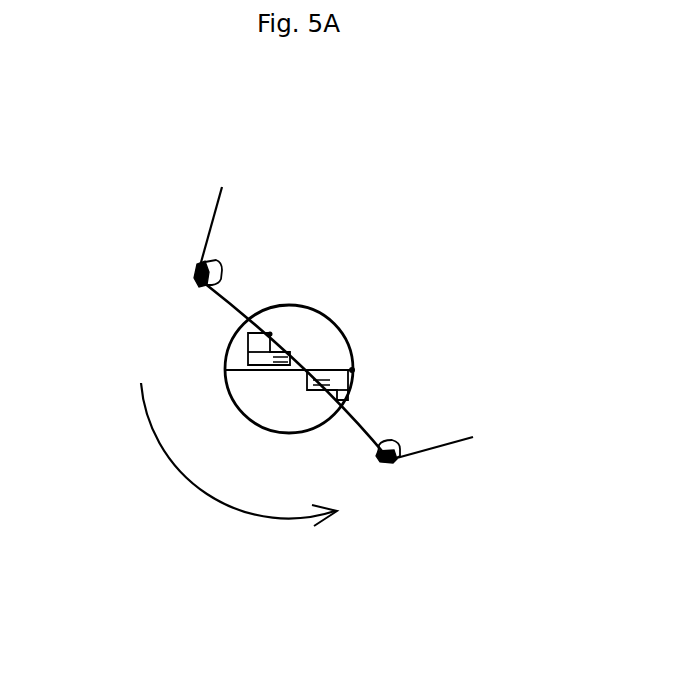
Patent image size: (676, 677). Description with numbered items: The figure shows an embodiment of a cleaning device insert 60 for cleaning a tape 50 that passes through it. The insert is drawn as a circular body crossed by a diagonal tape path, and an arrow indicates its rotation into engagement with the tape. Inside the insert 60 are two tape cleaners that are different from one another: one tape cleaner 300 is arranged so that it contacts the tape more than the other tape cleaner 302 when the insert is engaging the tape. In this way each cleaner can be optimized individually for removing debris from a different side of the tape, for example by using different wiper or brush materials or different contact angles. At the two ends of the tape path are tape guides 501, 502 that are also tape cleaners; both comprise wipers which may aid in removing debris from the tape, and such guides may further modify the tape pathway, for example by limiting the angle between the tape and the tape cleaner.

The film strip 50 is at (429, 458).
The cleaning device insert 60 is at (333, 342).
The tape cleaner 300 is at (247, 346).
The second chip element 302 is at (353, 384).
The tape guide 501 is at (227, 262).
The second clip 502 is at (403, 440).